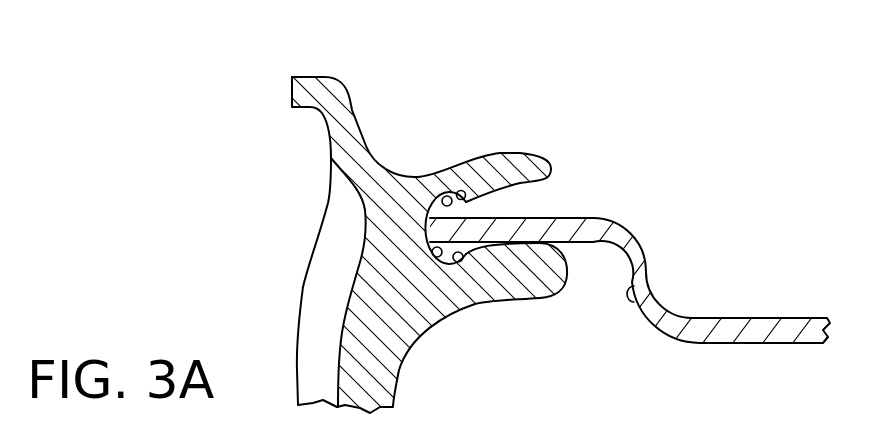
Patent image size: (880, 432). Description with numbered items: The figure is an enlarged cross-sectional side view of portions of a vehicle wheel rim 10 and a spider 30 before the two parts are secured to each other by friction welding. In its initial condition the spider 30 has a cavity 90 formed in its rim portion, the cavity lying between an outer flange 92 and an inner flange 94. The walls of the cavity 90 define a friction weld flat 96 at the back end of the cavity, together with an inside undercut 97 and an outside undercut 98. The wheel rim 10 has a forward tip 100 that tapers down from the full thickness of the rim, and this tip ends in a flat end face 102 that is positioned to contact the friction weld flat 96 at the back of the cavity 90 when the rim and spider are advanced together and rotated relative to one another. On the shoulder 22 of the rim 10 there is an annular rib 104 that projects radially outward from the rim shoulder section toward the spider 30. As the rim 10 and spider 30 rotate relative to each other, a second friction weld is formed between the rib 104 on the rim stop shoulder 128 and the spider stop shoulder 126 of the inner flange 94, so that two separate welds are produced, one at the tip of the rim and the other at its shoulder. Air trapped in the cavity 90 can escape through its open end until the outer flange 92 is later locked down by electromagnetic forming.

The wheel rim 10 is at (760, 310).
The shoulder of the rim 22 is at (590, 213).
The spider 30 is at (440, 214).
The cavity 90 is at (445, 216).
The outer flange 92 is at (527, 166).
The inner flange 94 is at (513, 273).
The friction weld flat 96 is at (436, 252).
The inside undercut 97 is at (460, 260).
The outside undercut 98 is at (461, 190).
The forward tip 100 is at (444, 199).
The flat end face 102 is at (450, 224).
The annular rib 104 is at (630, 302).
The spider stop shoulder 126 is at (563, 283).
The rim stop shoulder 128 is at (636, 240).